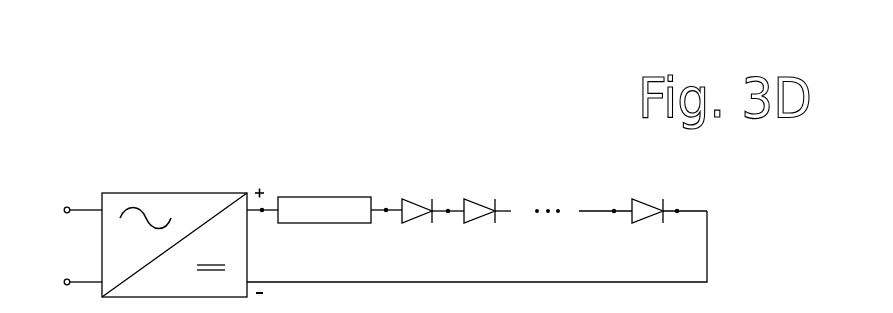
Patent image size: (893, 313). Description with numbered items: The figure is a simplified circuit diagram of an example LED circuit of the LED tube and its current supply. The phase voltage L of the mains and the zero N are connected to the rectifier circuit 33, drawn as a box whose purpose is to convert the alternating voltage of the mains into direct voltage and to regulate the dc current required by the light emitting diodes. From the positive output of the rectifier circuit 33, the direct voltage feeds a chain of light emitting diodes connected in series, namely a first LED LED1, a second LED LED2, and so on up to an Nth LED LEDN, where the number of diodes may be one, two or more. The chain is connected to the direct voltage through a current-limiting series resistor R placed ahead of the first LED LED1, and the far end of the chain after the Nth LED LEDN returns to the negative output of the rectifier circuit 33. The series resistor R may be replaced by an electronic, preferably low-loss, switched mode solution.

The rectifier circuit 33 is at (183, 193).
The zero N is at (60, 211).
The phase voltage L is at (62, 282).
The series resistor R is at (324, 197).
The first LED of the LED chain LED1 is at (420, 197).
The second LED of the LED chain LED2 is at (482, 197).
The Nth LED of the LED chain LEDN is at (644, 197).